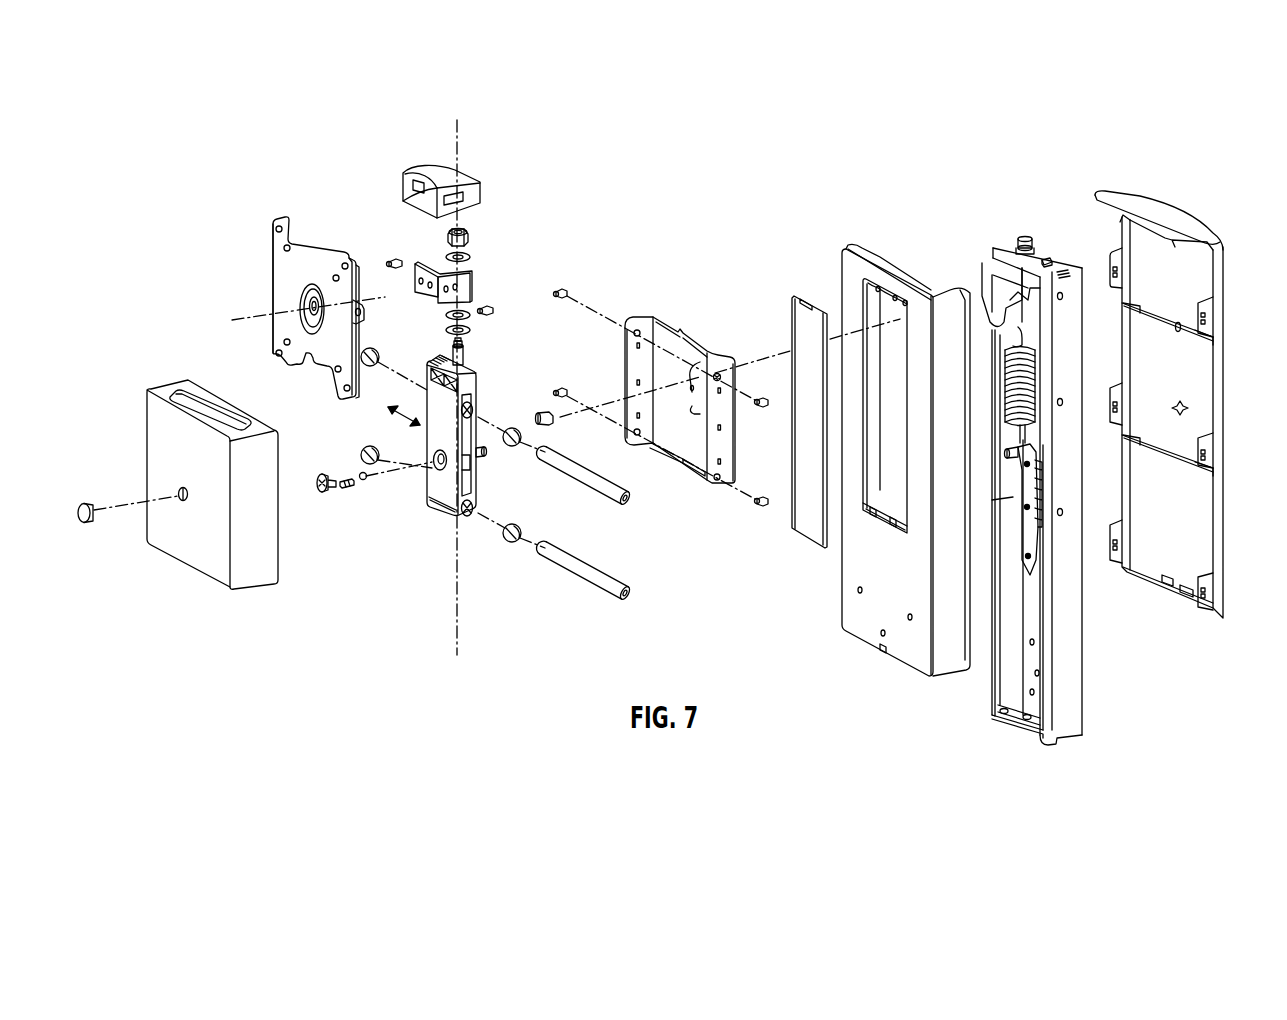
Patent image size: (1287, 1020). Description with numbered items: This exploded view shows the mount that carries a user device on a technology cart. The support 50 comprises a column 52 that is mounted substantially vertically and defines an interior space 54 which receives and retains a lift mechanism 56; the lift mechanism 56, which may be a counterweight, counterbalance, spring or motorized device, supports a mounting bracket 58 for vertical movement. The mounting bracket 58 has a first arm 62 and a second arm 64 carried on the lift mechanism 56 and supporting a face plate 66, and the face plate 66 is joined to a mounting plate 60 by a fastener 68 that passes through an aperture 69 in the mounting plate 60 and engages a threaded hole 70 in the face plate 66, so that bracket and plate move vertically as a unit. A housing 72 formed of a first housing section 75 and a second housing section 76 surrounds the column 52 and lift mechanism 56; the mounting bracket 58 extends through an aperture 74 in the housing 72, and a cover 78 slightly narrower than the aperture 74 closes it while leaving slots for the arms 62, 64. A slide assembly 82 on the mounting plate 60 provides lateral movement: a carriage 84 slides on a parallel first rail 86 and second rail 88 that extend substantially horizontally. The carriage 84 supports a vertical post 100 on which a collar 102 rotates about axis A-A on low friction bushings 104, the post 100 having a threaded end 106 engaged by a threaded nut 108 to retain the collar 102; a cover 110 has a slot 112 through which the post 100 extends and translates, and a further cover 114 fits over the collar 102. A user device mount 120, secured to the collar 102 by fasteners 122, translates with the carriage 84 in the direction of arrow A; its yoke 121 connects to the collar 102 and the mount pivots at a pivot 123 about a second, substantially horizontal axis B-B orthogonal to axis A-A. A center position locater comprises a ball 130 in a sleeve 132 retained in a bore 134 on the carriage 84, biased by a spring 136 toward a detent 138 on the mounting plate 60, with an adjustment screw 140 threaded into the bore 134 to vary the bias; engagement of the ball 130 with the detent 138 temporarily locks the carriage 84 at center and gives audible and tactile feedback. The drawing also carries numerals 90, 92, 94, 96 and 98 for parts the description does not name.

The support 50 is at (938, 138).
The column 52 is at (1083, 622).
The interior space 54 is at (1003, 678).
The lift mechanism 56 is at (992, 473).
The mounting bracket 58 is at (984, 257).
The mounting plate 60 is at (681, 318).
The first arm 62 is at (990, 250).
The second arm 64 is at (1040, 270).
The face plate 66 is at (986, 280).
The fastener 68 is at (544, 411).
The aperture 69 is at (704, 368).
The threaded hole 70 is at (1000, 327).
The housing 72 is at (1141, 170).
The aperture 74 is at (904, 427).
The first housing section 75 is at (1217, 363).
The second housing section 76 is at (842, 604).
The cover 78 is at (790, 534).
The slide assembly 82 is at (522, 588).
The carriage 84 is at (432, 512).
The first rail 86 is at (608, 571).
The second rail 88 is at (605, 507).
The side wall 90 is at (624, 358).
The screw 92 is at (560, 288).
The hole 94 is at (470, 516).
The hole 96 is at (472, 406).
The spacer 98 is at (364, 380).
The post 100 is at (465, 352).
The collar 102 is at (471, 277).
The bushings 104 is at (469, 256).
The threaded end 106 is at (452, 343).
The threaded nut 108 is at (466, 229).
The cover 110 is at (238, 598).
The slot 112 is at (205, 399).
The cover 114 is at (476, 184).
The user device mount 120 is at (312, 236).
The yoke 121 is at (358, 324).
The fasteners 122 is at (400, 258).
The pivot 123 is at (272, 294).
The ball 130 is at (364, 480).
The sleeve 132 is at (486, 450).
The bore 134 is at (478, 468).
The spring 136 is at (349, 490).
The detent 138 is at (700, 414).
The adjustment screw 140 is at (320, 492).
The axis A- A is at (431, 387).
The axis B- B is at (308, 302).